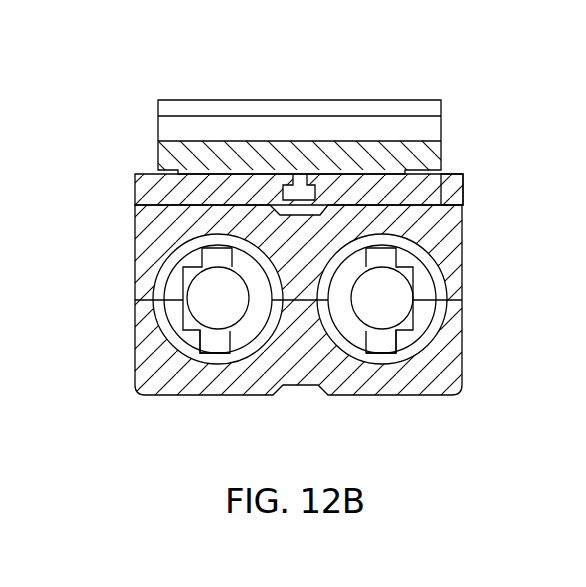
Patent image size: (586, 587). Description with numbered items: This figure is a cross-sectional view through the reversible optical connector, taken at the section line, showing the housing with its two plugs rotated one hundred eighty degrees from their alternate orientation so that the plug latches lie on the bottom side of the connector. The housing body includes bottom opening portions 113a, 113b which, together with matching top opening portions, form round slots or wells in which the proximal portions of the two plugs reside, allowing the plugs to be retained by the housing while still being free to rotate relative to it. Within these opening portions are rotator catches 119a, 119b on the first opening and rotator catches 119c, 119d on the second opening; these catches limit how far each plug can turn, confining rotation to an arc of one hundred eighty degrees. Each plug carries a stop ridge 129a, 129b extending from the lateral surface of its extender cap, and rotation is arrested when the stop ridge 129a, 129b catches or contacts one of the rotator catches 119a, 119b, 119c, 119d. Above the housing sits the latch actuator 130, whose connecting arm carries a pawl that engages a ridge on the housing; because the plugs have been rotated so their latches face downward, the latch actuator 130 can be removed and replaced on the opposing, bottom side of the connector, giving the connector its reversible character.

The latch actuator 130 is at (320, 100).
The stop ridge 129a is at (206, 258).
The stop ridge 129b is at (412, 237).
The bottom opening portion 113a is at (224, 363).
The bottom opening portion 113b is at (390, 361).
The rotator catch 119a is at (201, 250).
The rotator catch 119b is at (199, 340).
The rotator catch 119c is at (397, 255).
The rotator catch 119d is at (397, 343).